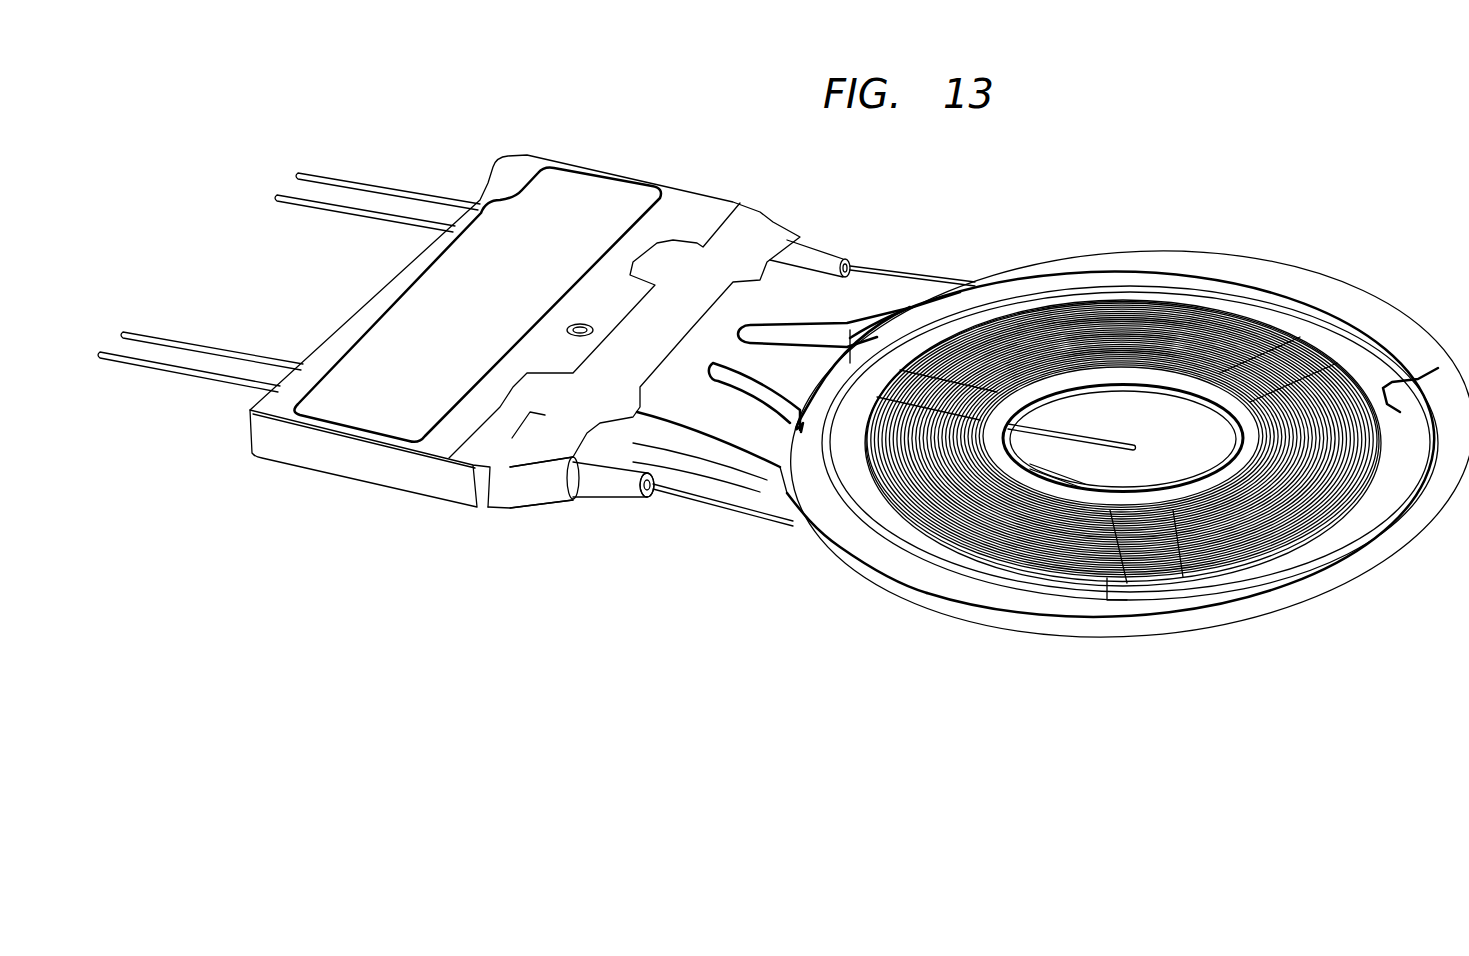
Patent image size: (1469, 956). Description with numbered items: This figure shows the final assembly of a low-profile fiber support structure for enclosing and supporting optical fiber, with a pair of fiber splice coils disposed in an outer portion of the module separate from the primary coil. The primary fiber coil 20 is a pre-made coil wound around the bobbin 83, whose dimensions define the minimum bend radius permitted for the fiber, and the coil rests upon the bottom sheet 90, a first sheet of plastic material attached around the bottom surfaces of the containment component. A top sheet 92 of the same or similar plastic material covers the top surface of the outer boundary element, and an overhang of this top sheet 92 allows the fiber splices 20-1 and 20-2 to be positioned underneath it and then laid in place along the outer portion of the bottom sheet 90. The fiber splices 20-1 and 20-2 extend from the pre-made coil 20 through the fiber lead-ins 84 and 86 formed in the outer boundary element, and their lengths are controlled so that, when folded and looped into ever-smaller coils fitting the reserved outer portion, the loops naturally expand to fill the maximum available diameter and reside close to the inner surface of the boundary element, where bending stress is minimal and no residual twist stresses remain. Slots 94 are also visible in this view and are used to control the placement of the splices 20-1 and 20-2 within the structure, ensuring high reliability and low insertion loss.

The fiber coil 20 is at (1152, 330).
The fiber splice 20-1 is at (858, 350).
The fiber splice 20-2 is at (795, 458).
The bobbin 83 is at (1090, 380).
The fiber lead-in 84 is at (723, 380).
The fiber lead-in 86 is at (757, 333).
The bottom sheet 90 is at (1370, 380).
The top sheet 92 is at (1322, 295).
The slots 94 is at (1107, 588).